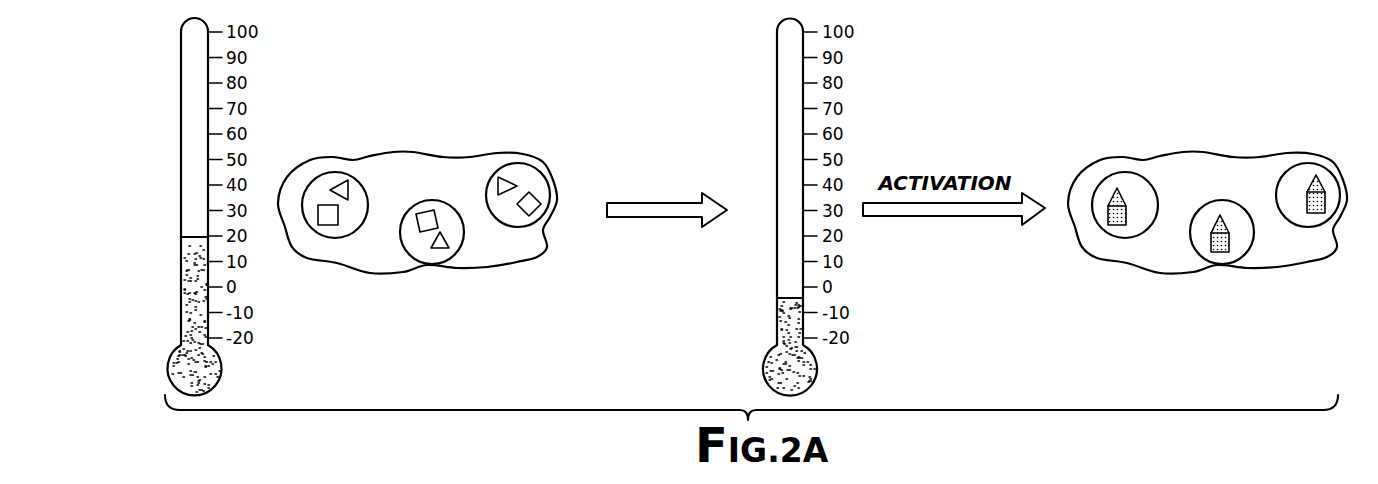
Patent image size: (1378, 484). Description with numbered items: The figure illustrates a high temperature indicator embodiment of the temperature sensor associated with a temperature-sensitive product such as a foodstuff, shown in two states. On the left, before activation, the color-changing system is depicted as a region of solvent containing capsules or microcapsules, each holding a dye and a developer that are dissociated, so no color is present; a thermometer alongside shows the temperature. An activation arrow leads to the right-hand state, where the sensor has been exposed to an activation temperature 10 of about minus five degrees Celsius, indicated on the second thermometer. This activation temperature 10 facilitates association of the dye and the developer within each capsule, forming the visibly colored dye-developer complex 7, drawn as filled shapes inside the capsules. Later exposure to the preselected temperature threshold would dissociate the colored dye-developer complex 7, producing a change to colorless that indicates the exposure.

The colored dye-developer complex 7 is at (1225, 224).
The activation temperature 10 is at (813, 300).